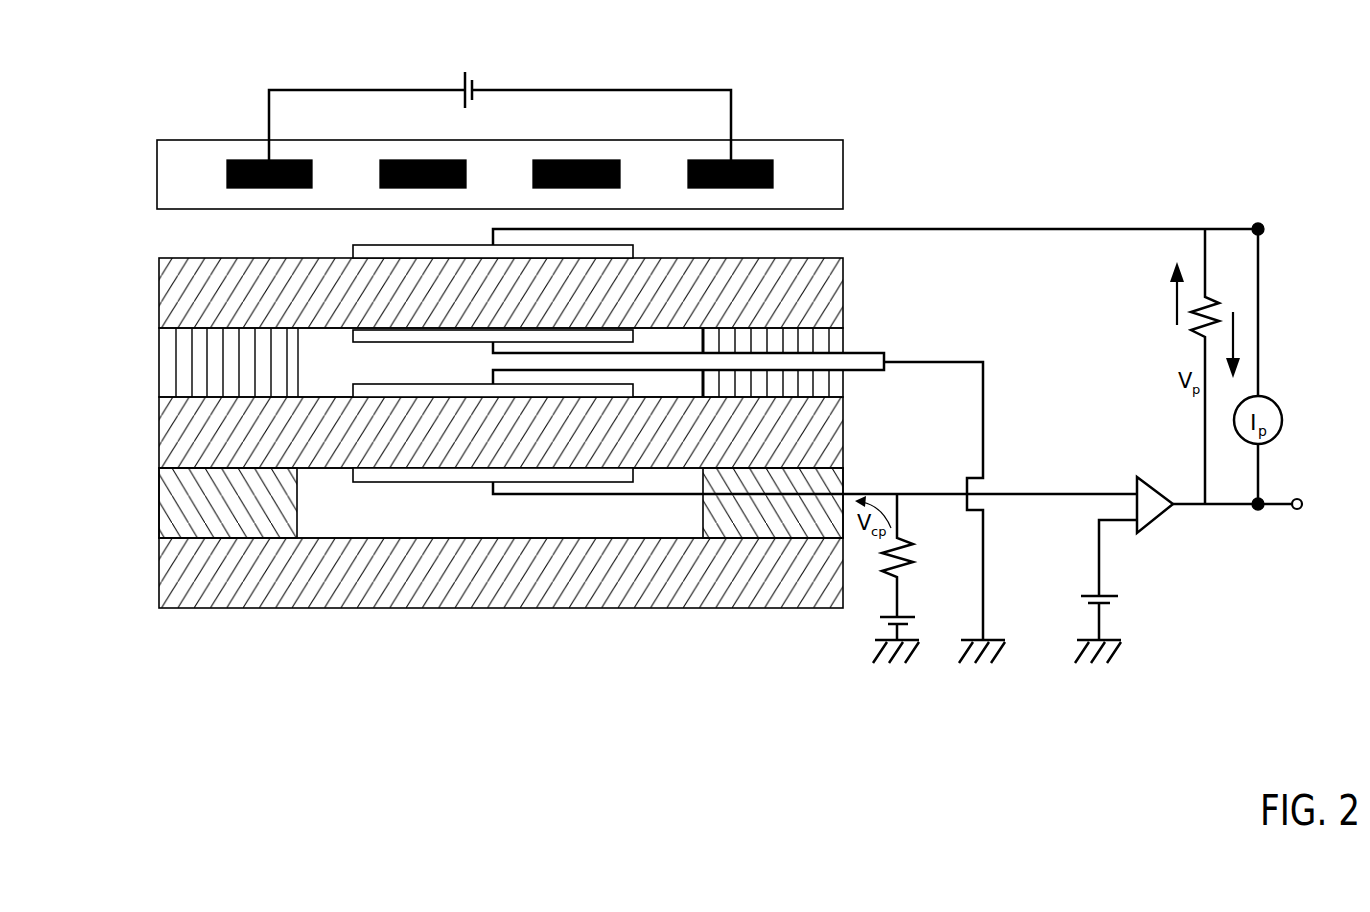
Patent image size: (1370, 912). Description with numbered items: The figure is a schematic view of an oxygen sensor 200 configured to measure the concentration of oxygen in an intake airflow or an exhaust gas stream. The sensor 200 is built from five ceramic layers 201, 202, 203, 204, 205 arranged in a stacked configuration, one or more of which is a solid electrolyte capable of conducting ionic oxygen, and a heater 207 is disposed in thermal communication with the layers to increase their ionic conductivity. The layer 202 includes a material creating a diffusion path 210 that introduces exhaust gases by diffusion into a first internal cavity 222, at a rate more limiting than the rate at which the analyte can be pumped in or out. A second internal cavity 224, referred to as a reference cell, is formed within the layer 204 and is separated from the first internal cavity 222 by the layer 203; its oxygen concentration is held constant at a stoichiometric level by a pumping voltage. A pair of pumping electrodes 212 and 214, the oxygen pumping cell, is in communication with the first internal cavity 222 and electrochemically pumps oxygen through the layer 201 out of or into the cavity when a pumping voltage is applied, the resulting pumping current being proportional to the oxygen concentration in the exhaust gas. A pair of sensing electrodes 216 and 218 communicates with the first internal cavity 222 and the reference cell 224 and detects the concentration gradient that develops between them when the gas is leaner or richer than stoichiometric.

The oxygen sensor 200 is at (833, 80).
The heater 207 is at (226, 164).
The layer 201 is at (158, 272).
The layer 202 is at (158, 342).
The diffusion path 210 is at (191, 378).
The layer 203 is at (158, 458).
The layer 204 is at (158, 525).
The layer 205 is at (158, 595).
The pumping electrode 212 is at (353, 246).
The pumping electrode 214 is at (353, 342).
The sensing electrode 216 is at (353, 385).
The sensing electrode 218 is at (353, 482).
The first internal cavity 222 is at (452, 371).
The second internal cavity 224 is at (453, 519).